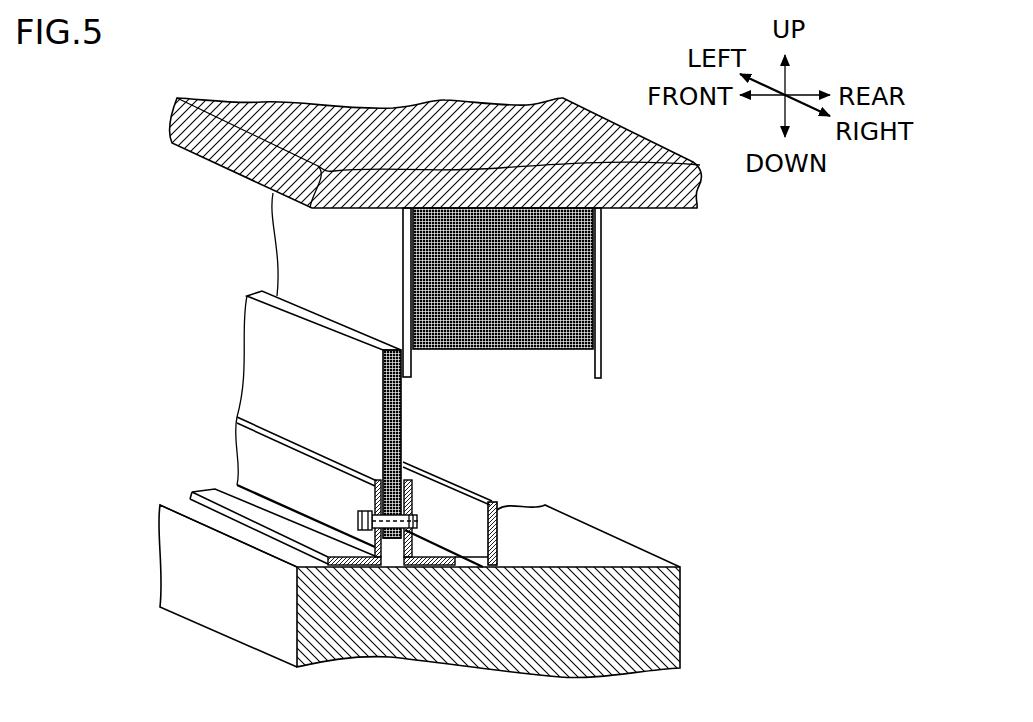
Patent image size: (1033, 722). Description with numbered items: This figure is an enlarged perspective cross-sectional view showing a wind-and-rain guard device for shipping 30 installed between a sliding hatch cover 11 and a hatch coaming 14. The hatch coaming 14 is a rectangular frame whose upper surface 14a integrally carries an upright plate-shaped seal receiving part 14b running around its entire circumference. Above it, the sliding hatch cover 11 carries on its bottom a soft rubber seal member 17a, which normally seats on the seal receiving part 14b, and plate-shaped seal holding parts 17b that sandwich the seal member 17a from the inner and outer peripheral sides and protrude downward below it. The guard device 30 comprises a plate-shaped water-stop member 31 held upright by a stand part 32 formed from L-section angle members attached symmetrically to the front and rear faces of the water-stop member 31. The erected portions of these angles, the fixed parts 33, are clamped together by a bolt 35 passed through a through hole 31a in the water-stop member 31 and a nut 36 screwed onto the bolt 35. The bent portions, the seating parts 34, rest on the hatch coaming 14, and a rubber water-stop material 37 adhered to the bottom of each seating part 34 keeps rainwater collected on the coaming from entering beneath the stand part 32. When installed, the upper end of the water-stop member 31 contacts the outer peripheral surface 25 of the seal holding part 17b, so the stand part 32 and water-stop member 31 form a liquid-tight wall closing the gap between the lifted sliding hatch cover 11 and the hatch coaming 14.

The sliding hatch cover 11 is at (692, 219).
The hatch coaming 14 is at (646, 536).
The upper surface 14a is at (192, 496).
The seal receiving part 14b is at (490, 502).
The seal member 17a is at (497, 348).
The seal holding part 17b is at (411, 377).
The outer peripheral surface 25 is at (310, 268).
The wind-and-rain guard device for shipping 30 is at (230, 299).
The water-stop member 31 is at (243, 342).
The through hole 31a is at (395, 545).
The stand part 32 is at (234, 431).
The fixed part 33 is at (252, 462).
The seating part 34 is at (220, 492).
The bolt 35 is at (413, 521).
The nut 36 is at (361, 511).
The water-stop material 37 is at (265, 535).